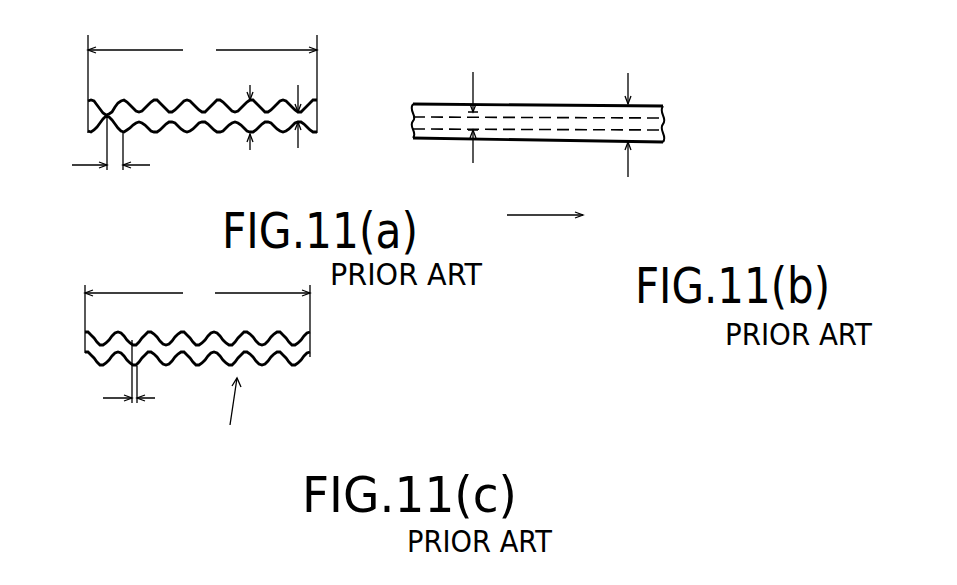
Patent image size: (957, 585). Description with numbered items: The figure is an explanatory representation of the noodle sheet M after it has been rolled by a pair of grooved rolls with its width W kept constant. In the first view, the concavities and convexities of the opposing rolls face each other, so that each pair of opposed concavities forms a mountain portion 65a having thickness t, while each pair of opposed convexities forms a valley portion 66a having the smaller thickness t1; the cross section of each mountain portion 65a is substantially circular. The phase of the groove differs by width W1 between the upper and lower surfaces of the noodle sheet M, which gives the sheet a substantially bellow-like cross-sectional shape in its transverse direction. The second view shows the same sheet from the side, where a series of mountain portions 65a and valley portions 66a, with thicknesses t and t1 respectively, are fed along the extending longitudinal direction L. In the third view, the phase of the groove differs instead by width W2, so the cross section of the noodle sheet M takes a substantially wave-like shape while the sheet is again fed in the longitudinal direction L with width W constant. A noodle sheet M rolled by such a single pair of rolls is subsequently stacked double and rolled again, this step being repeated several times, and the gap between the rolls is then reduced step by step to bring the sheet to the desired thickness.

In FIG. 11A, the mountain portion 65a is at (222, 130).
In FIG. 11B, the mountain portion 65a is at (533, 105).
In FIG. 11C, the mountain portion 65a is at (277, 335).
In FIG. 11A, the valley portion 66a is at (267, 125).
In FIG. 11B, the valley portion 66a is at (520, 129).
In FIG. 11C, the valley portion 66a is at (275, 358).
In FIG. 11A, the width W is at (202, 51).
In FIG. 11C, the width W is at (197, 293).
In FIG. 11A, the width W1 is at (128, 149).
In FIG. 11C, the width W2 is at (149, 379).
In FIG. 11A, the thickness t is at (250, 104).
In FIG. 11B, the thickness t is at (634, 116).
In FIG. 11A, the thickness t1 is at (297, 103).
In FIG. 11B, the thickness t1 is at (487, 108).
In FIG. 11B, the longitudinal direction L is at (545, 233).
In FIG. 11C, the noodle sheet M is at (232, 418).